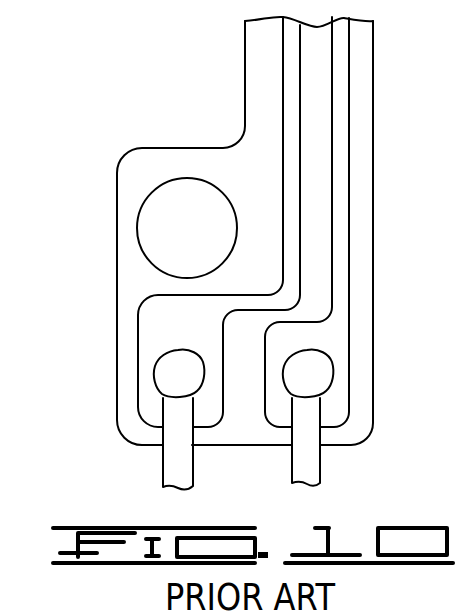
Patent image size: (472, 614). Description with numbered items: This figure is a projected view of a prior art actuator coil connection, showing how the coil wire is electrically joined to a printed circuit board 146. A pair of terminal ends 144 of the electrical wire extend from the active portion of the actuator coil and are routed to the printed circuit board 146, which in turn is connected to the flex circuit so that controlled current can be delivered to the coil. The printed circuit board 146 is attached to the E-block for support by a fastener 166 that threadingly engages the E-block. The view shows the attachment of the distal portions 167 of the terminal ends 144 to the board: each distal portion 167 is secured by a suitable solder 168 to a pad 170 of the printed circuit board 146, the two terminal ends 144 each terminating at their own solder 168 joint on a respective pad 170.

The terminal ends 144 is at (163, 468).
The printed circuit board 146 is at (237, 140).
The fastener 166 is at (143, 202).
The distal portions 167 is at (180, 412).
The solder 168 is at (158, 358).
The pad 170 is at (148, 408).